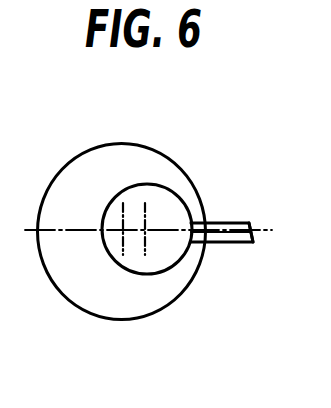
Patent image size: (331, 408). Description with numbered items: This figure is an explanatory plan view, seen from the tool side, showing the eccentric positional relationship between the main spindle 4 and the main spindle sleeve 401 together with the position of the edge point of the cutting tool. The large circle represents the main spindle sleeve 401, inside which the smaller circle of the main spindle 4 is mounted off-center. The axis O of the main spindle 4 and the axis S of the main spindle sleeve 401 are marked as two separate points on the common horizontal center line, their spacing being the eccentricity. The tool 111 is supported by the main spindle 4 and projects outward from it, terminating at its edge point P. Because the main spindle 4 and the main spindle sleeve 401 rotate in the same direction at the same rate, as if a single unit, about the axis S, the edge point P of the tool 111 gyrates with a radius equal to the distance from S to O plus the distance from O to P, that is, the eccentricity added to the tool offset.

The main spindle sleeve 401 is at (102, 163).
The main spindle 4 is at (160, 198).
The tool 111 is at (228, 223).
The edge point of the tool P is at (252, 242).
The axis of the main spindle sleeve S is at (123, 235).
The axis of the main spindle O is at (145, 235).